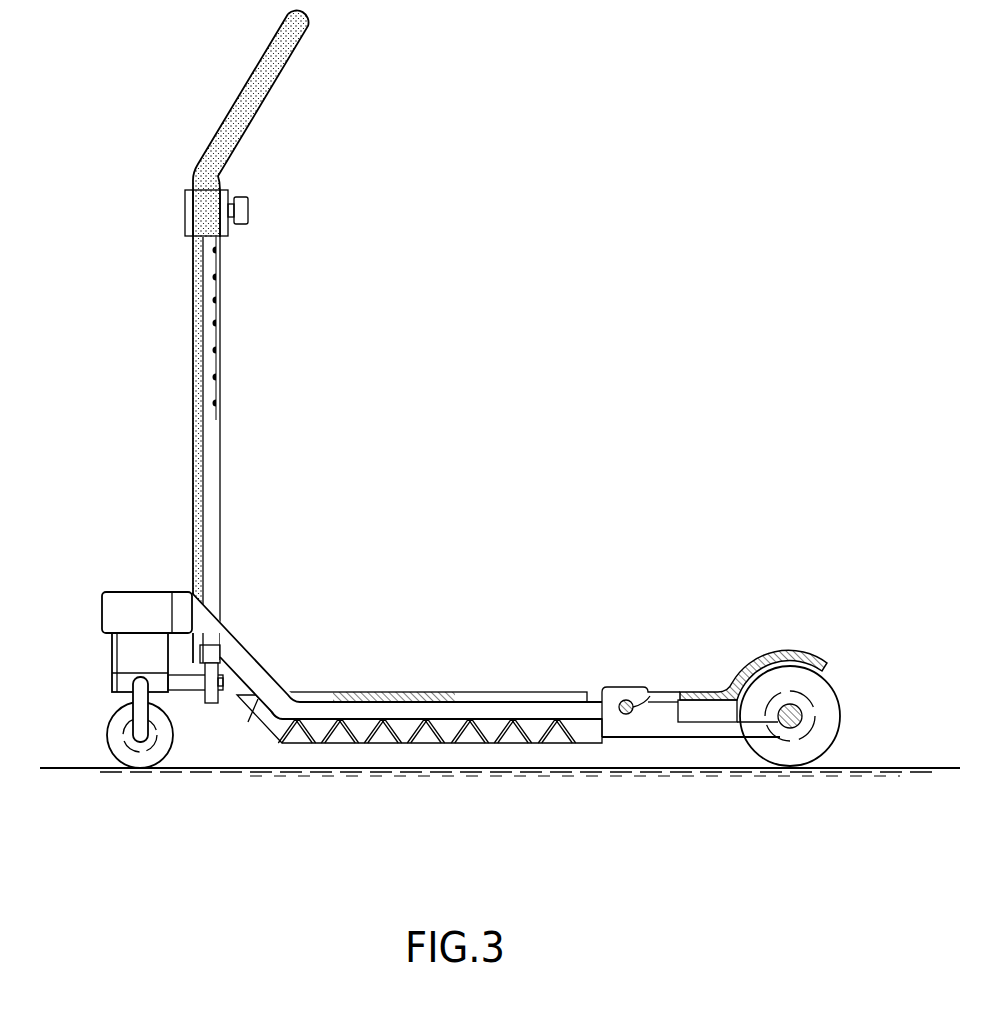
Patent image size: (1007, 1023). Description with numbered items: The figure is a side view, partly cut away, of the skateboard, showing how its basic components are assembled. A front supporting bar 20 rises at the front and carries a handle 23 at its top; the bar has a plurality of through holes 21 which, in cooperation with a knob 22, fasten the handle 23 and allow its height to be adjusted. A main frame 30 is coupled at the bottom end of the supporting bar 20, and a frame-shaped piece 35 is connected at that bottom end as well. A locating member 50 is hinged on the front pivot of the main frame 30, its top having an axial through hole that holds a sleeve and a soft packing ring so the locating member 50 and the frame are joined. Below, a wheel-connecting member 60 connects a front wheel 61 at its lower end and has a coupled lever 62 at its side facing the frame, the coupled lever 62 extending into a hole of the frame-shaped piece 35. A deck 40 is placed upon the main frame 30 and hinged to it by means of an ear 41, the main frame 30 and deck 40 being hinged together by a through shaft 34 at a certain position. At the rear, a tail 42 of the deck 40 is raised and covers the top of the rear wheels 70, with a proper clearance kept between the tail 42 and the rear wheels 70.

The front supporting bar 20 is at (212, 437).
The through holes 21 is at (218, 350).
The knob 22 is at (243, 212).
The handle 23 is at (267, 90).
The main frame 30 is at (250, 658).
The through shaft 34 is at (630, 714).
The frame-shaped piece 35 is at (212, 703).
The deck 40 is at (508, 692).
The ear 41 is at (597, 730).
The tail 42 is at (792, 648).
The locating member 50 is at (130, 597).
The wheel-connecting member 60 is at (112, 682).
The front wheel 61 is at (115, 745).
The coupled lever 62 is at (188, 685).
The rear wheels 70 is at (836, 713).